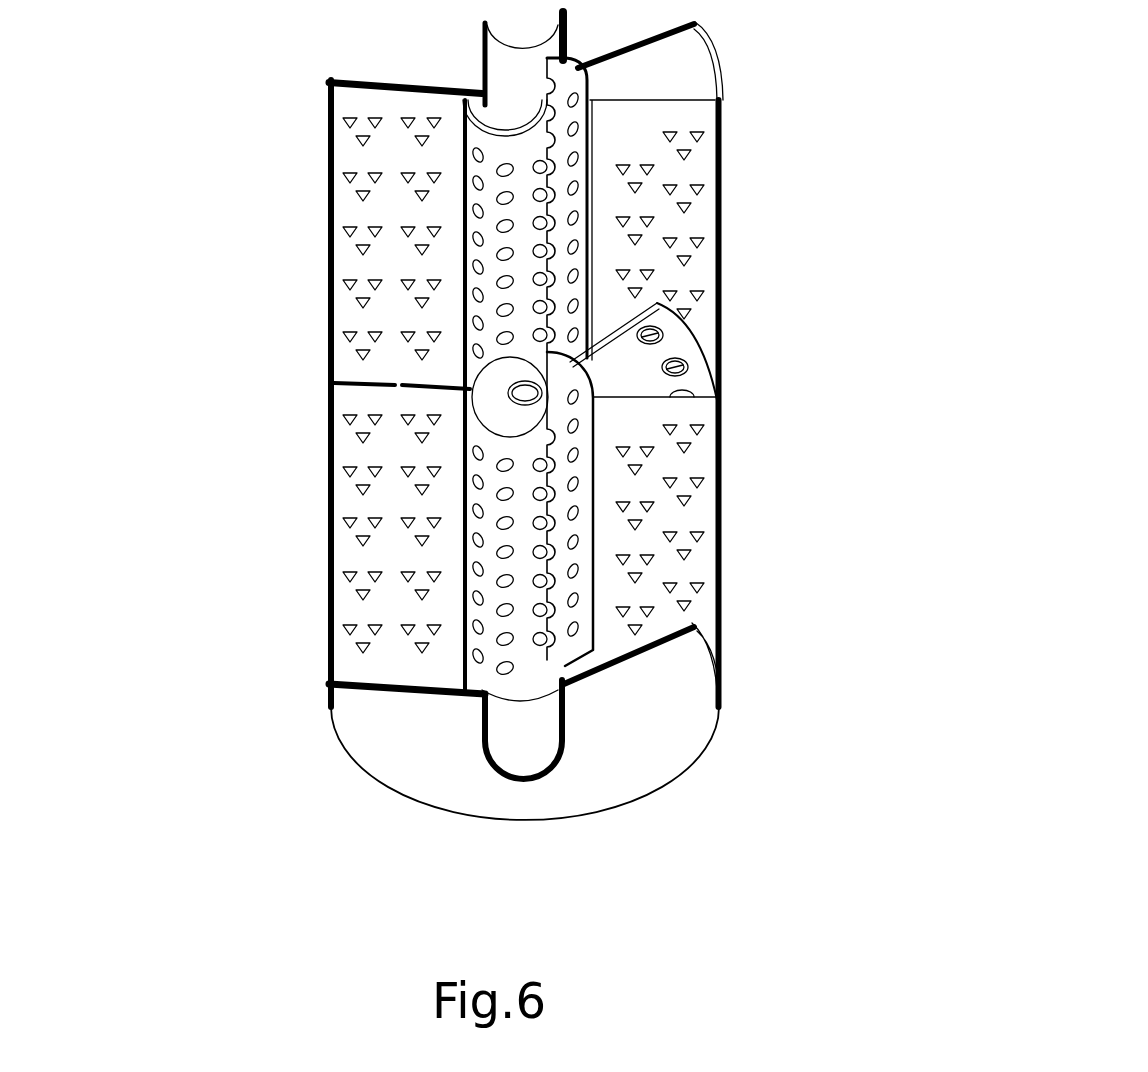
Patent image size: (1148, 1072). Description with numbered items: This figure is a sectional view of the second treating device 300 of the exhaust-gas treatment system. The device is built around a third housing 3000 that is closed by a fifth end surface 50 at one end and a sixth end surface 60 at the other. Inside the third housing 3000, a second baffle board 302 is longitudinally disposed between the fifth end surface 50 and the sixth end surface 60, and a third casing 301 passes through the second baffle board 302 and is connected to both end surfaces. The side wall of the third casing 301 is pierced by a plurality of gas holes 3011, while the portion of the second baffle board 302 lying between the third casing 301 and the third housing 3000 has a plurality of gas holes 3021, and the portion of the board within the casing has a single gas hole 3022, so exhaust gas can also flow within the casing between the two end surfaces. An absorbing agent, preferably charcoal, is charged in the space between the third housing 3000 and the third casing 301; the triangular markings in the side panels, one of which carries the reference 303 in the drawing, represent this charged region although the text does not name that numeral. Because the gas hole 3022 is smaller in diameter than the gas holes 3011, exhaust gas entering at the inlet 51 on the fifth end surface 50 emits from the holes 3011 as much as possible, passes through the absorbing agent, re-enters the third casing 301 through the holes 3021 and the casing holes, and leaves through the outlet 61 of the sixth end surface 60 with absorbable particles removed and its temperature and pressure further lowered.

The second treating device 300 is at (288, 257).
The third housing 3000 is at (718, 597).
The third casing 301 is at (588, 205).
The gas holes 3011 is at (502, 493).
The second baffle board 302 is at (607, 372).
The gas holes 3021 is at (650, 335).
The gas hole 3022 is at (520, 392).
The lower side panel 303 is at (360, 590).
The fifth end surface 50 is at (628, 720).
The inlet 51 is at (520, 732).
The sixth end surface 60 is at (607, 87).
The outlet 61 is at (513, 67).